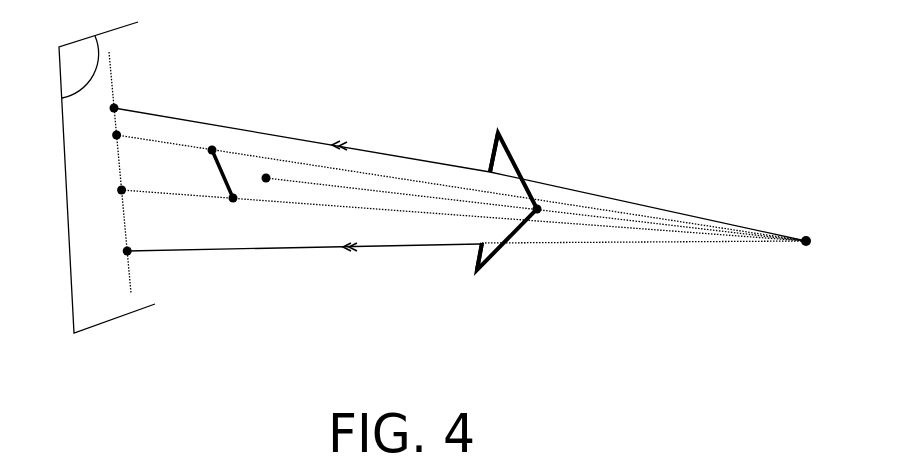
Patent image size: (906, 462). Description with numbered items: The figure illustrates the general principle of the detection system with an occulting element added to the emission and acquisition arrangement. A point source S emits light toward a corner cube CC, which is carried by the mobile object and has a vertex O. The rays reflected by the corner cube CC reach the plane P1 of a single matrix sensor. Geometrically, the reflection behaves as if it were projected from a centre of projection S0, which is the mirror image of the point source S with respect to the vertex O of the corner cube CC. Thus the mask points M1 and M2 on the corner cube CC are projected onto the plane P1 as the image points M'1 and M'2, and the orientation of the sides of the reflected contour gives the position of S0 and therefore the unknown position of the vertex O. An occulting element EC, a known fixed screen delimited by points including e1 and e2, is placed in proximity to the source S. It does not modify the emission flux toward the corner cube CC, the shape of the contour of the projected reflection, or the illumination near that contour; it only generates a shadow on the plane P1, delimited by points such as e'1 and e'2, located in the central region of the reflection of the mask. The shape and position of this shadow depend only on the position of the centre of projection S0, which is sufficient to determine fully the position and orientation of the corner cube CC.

The plane of the matrix sensor P1 is at (107, 177).
The image point M'1 is at (440, 166).
The shadow point e'1 is at (446, 186).
The shadow point e'2 is at (450, 214).
The image point M'2 is at (449, 251).
The occulting element EC is at (225, 172).
The screen point e1 is at (215, 142).
The screen point e2 is at (241, 209).
The point source S is at (527, 202).
The corner cube CC is at (492, 255).
The mask point M1 is at (480, 152).
The mask point M2 is at (463, 258).
The vertex of the corner cube O is at (543, 199).
The centre of projection S0 is at (804, 253).